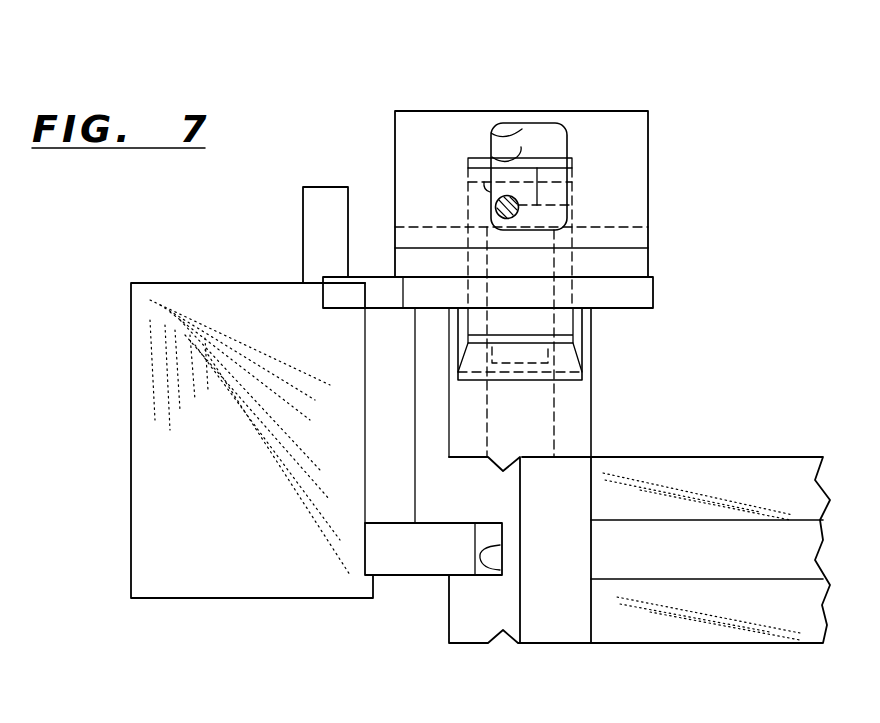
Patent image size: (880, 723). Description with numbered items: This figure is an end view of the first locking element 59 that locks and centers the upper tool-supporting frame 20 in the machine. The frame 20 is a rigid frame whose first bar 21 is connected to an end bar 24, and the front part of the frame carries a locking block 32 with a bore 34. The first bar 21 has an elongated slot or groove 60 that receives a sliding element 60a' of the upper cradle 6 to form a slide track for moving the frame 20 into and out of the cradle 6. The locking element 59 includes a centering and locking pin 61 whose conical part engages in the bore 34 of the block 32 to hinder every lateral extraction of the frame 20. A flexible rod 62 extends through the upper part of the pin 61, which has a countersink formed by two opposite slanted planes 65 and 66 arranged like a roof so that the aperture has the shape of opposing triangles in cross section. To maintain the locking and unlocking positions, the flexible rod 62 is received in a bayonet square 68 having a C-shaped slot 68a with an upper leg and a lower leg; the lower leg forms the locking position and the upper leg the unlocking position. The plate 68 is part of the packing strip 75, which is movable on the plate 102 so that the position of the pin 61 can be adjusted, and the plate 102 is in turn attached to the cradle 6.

The upper cradle 6 is at (197, 283).
The upper tool-supporting frame 20 is at (472, 643).
The first bar 21 is at (477, 613).
The end bar 24 is at (685, 607).
The locking block 32 is at (573, 397).
The bore 34 is at (552, 452).
The first locking element 59 is at (548, 94).
The groove 60 is at (481, 557).
The slide bar 60a' is at (341, 585).
The centering and locking pin 61 is at (525, 263).
The flexible rod 62 is at (518, 208).
The slanted plane 65 is at (487, 192).
The slanted plane 66 is at (492, 213).
The bayonet square 68 is at (607, 138).
The C-shaped slot 68a is at (493, 133).
The packing strip 75 is at (615, 265).
The plate 102 is at (620, 298).